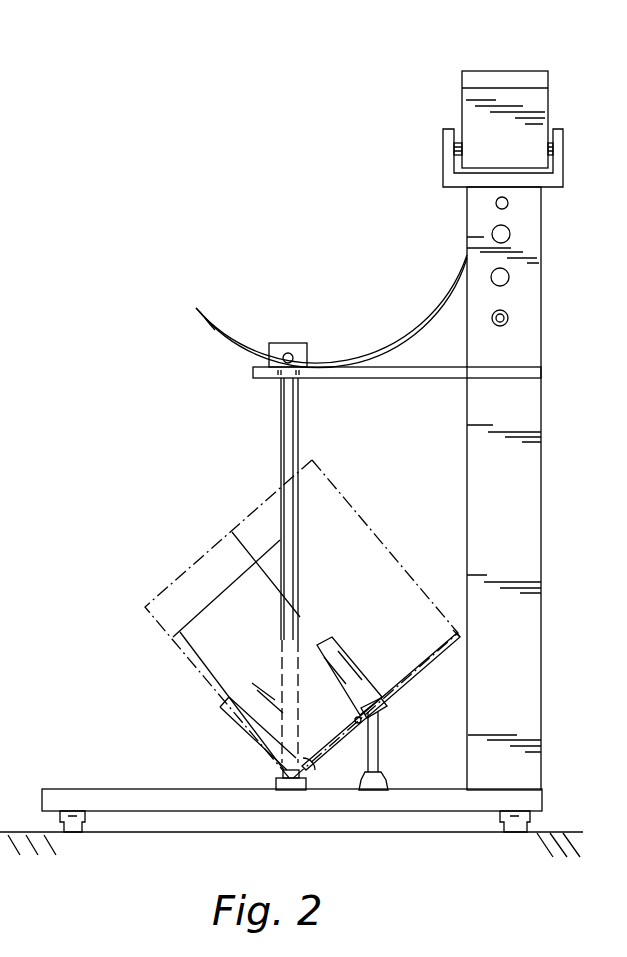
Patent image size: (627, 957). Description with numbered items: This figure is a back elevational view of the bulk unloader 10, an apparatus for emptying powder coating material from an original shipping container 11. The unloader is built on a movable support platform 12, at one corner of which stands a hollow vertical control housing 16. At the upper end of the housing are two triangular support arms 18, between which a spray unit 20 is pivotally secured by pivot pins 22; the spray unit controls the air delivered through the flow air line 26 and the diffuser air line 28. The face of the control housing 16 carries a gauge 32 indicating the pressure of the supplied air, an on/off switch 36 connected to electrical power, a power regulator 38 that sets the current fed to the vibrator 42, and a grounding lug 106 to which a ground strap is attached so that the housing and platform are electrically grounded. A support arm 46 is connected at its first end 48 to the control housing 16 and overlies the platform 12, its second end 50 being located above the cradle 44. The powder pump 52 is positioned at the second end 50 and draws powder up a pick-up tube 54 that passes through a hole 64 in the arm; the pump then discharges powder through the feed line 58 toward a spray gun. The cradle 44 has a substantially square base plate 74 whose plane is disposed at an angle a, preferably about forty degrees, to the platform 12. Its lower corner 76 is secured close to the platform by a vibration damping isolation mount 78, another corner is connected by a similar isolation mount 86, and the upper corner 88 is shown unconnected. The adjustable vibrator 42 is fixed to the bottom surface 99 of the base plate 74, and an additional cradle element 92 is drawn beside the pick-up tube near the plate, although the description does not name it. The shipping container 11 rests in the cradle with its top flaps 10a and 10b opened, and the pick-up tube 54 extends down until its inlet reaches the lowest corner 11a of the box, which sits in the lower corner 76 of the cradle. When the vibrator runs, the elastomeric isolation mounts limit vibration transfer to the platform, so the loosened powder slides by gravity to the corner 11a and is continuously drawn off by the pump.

The bulk unloader 10 is at (330, 511).
The top flap 10a is at (177, 577).
The top flap 10b is at (357, 510).
The shipping container 11 is at (440, 583).
The lowest corner of box 11a is at (277, 770).
The support platform 12 is at (418, 813).
The control housing 16 is at (528, 515).
The support arms 18 is at (447, 157).
The spray unit 20 is at (508, 102).
The pivot pins 22 is at (453, 148).
The flow air line 26 is at (331, 311).
The diffuser air line 28 is at (331, 311).
The gauge 32 is at (510, 234).
The on/off switch 36 is at (508, 318).
The power regulator 38 is at (509, 278).
The vibrator 42 is at (383, 710).
The cradle 44 is at (413, 750).
The support arm 46 is at (430, 378).
The first end of support arm 48 is at (513, 373).
The second end of support arm 50 is at (384, 356).
The powder pump 52 is at (292, 343).
The pick-up tube 54 is at (300, 430).
The feed line 58 is at (210, 315).
The hole 64 is at (303, 374).
The base plate 74 is at (408, 700).
The lower corner 76 is at (313, 780).
The vibration damping isolation mount 78 is at (283, 785).
The vibration damping isolation mount 86 is at (380, 747).
The upper corner 88 is at (455, 637).
The holder 92 is at (357, 640).
The bottom surface 99 is at (312, 768).
The grounding lug 106 is at (509, 203).
The angle a is at (323, 787).